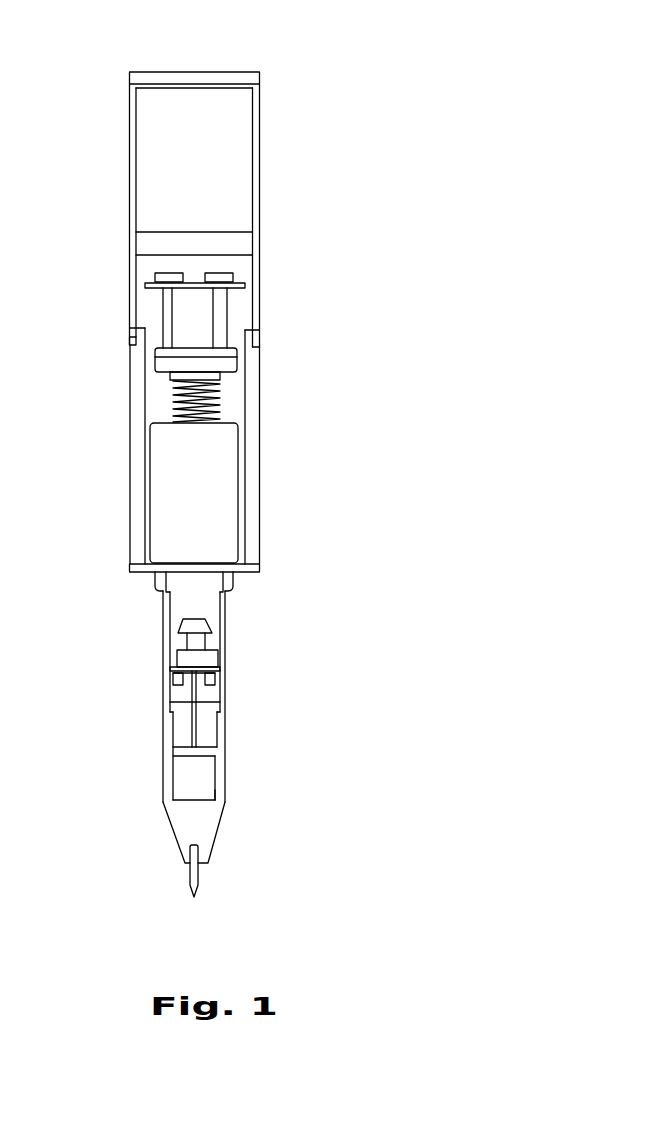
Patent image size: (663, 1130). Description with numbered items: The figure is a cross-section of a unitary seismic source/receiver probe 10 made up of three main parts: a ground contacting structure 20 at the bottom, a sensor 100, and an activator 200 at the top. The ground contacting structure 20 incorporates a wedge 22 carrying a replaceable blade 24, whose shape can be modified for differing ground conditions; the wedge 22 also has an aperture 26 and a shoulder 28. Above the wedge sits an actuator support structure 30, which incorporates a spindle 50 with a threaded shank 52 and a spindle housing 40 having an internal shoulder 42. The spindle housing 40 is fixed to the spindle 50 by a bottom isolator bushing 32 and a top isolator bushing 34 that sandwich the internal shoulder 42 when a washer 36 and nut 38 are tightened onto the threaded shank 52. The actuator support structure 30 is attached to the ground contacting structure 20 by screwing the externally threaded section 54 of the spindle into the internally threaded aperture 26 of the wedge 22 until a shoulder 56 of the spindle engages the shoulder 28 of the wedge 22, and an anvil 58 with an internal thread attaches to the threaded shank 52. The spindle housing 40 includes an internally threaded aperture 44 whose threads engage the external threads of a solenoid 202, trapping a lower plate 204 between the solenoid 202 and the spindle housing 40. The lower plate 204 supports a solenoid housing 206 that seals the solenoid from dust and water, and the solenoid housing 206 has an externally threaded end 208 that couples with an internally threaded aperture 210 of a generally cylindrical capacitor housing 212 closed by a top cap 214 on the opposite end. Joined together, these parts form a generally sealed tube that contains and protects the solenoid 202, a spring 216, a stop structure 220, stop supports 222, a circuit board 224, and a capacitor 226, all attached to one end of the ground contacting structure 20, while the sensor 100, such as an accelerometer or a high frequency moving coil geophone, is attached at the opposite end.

The seismic probe 10 is at (234, 469).
The ground contacting structure 20 is at (191, 740).
The wedge 22 is at (220, 818).
The replaceable blade 24 is at (200, 884).
The aperture 26 is at (202, 787).
The shoulder 28 is at (162, 727).
The actuator support structure 30 is at (191, 664).
The bottom isolator bushing 32 is at (223, 693).
The top isolator bushing 34 is at (227, 677).
The washer 36 is at (226, 647).
The nut 38 is at (207, 650).
The spindle housing 40 is at (161, 641).
The internal shoulder 42 is at (173, 704).
The internally threaded aperture 44 is at (230, 587).
The spindle 50 is at (227, 718).
The threaded shank 52 is at (182, 647).
The externally threaded section 54 is at (208, 738).
The shoulder 56 is at (163, 710).
The anvil 58 is at (181, 642).
The sensor 100 is at (217, 800).
The activator 200 is at (234, 292).
The solenoid 202 is at (222, 468).
The lower plate 204 is at (130, 568).
The solenoid housing 206 is at (130, 452).
The externally threaded end 208 is at (131, 339).
The internally threaded aperture 210 is at (260, 357).
The capacitor housing 212 is at (261, 191).
The top cap 214 is at (241, 72).
The spring 216 is at (172, 410).
The stop structure 220 is at (178, 362).
The stop supports 222 is at (225, 312).
The circuit board 224 is at (150, 285).
The capacitor 226 is at (160, 178).